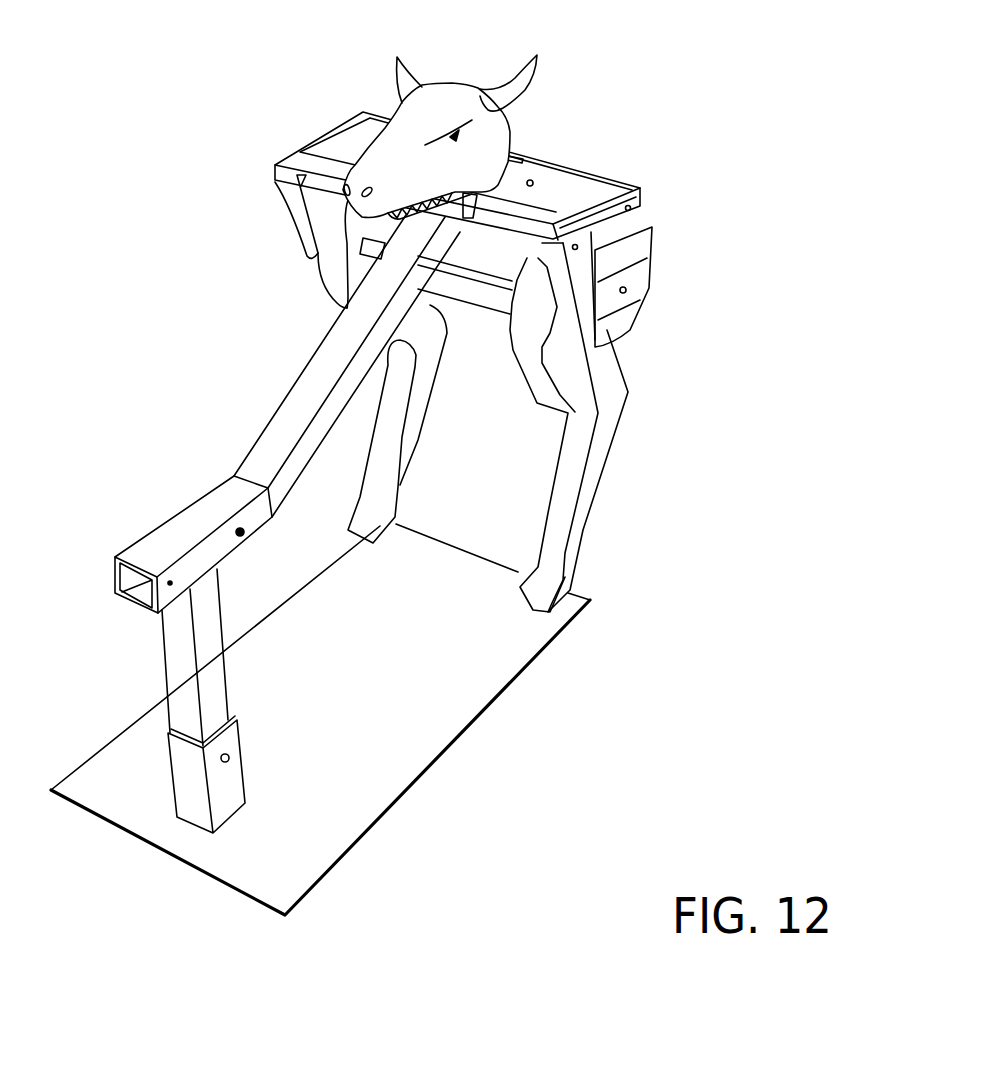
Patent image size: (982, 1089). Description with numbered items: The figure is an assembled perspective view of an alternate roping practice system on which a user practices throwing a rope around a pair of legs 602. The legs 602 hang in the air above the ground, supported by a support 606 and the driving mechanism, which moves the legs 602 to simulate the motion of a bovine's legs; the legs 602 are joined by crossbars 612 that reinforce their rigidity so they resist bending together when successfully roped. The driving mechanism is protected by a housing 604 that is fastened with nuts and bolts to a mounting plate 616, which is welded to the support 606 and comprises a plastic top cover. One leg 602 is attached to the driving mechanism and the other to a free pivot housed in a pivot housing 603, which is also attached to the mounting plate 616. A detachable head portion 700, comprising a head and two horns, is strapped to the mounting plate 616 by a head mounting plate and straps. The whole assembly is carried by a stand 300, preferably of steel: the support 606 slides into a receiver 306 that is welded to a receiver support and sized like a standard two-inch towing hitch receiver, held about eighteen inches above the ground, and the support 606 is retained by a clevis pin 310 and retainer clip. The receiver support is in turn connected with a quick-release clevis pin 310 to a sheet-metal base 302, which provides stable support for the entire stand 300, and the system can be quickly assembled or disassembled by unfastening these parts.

The detachable head portion 700 is at (447, 98).
The mounting plate 616 is at (640, 184).
The pivot housing 603 is at (292, 196).
The housing 604 is at (637, 257).
The support 606 is at (300, 385).
The crossbar 612 is at (473, 298).
The legs 602 is at (613, 398).
The receiver 306 is at (162, 540).
The stand 300 is at (181, 653).
The clevis pin 310 is at (232, 758).
The base 302 is at (427, 713).